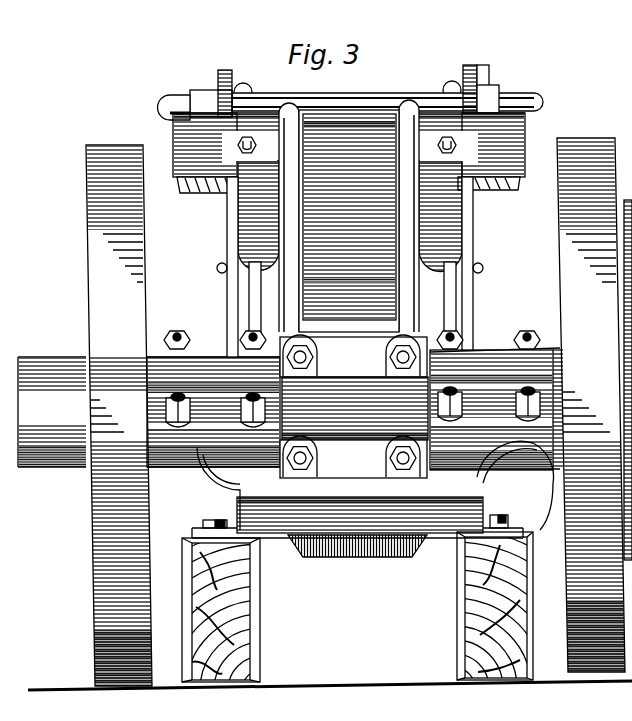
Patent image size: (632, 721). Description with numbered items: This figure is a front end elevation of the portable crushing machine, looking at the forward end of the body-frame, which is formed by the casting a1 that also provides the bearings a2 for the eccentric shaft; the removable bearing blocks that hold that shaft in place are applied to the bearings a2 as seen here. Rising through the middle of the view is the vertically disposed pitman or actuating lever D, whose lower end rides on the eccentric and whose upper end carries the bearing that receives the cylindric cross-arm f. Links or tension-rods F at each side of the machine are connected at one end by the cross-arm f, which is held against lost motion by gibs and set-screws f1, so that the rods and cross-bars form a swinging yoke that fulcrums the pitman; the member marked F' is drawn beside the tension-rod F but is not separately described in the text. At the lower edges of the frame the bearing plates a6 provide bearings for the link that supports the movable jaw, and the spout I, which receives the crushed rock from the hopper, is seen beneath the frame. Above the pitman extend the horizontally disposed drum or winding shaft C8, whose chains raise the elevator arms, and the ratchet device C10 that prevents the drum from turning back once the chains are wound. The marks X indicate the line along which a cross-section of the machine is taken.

The section line X— X is at (218, 72).
The gibs and set-screws f1 is at (247, 136).
The drum or winding shaft C8 is at (364, 98).
The ratchet device C10 is at (486, 80).
The cylindric cross-arm f is at (174, 137).
The links or tension-rods F is at (207, 216).
The pitman or actuating lever D is at (403, 220).
The hanger frame bar F' is at (504, 208).
The bearings a2 is at (203, 377).
The casting a1 is at (455, 470).
The bearing plates a6 is at (367, 360).
The spout I is at (355, 557).